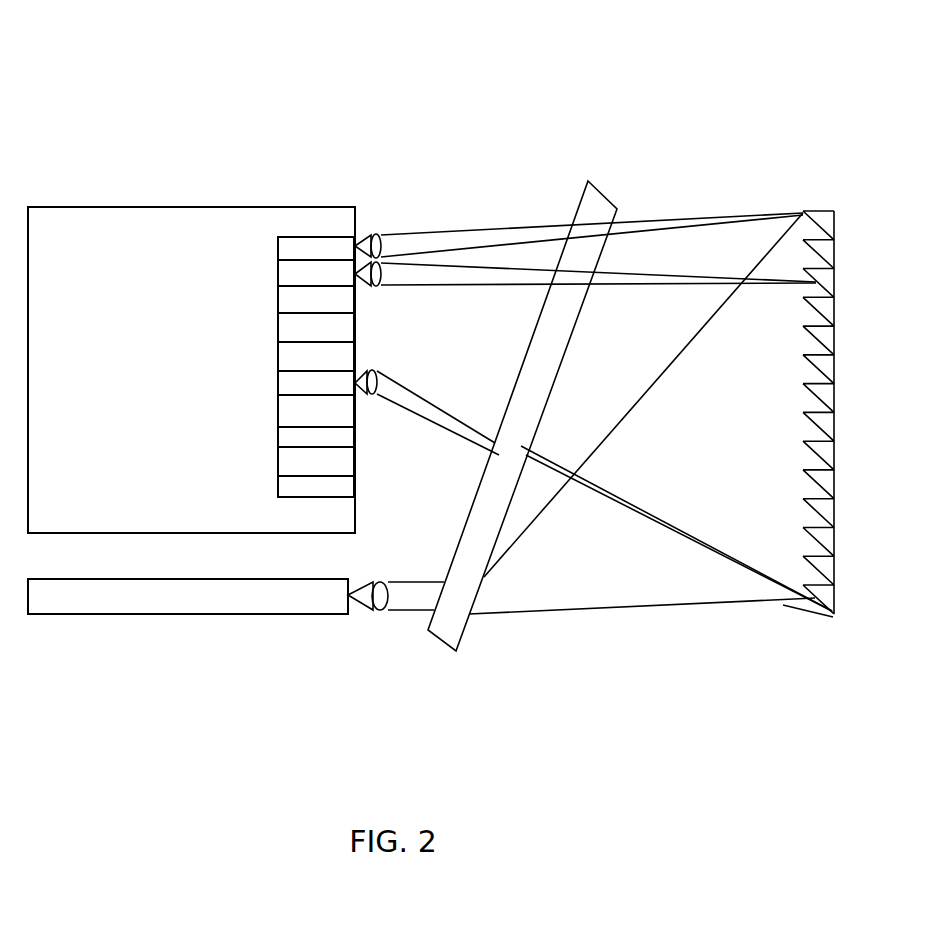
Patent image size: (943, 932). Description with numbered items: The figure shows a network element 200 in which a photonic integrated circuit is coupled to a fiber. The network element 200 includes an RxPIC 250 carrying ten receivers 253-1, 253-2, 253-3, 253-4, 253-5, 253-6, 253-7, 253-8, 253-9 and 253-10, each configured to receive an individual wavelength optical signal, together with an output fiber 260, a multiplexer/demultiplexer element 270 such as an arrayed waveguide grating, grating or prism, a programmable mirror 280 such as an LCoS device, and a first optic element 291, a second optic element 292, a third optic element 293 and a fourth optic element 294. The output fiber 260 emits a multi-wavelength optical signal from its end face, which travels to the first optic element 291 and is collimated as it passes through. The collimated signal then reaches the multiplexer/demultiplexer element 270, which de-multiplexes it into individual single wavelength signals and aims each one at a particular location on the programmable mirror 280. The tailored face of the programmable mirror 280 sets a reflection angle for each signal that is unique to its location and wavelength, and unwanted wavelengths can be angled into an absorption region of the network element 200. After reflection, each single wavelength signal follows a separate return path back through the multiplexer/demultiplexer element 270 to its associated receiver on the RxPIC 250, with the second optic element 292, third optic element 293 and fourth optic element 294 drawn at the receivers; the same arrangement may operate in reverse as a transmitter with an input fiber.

The network element 200 is at (431, 359).
The RxPIC 250 is at (128, 238).
The receiver 253-1 is at (316, 248).
The receiver 253-2 is at (316, 273).
The receiver 253-3 is at (316, 299).
The receiver 253-4 is at (316, 327).
The receiver 253-5 is at (316, 356).
The receiver 253-6 is at (316, 383).
The receiver 253-7 is at (316, 411).
The receiver 253-8 is at (316, 437).
The receiver 253-9 is at (316, 461).
The receiver 253-10 is at (316, 486).
The output fiber 260 is at (175, 607).
The multiplexer/demultiplexer element 270 is at (443, 645).
The programmable mirror 280 is at (830, 211).
The first optic element 291 is at (380, 612).
The second optic element 292 is at (372, 395).
The third optic element 293 is at (378, 286).
The fourth optic element 294 is at (373, 235).